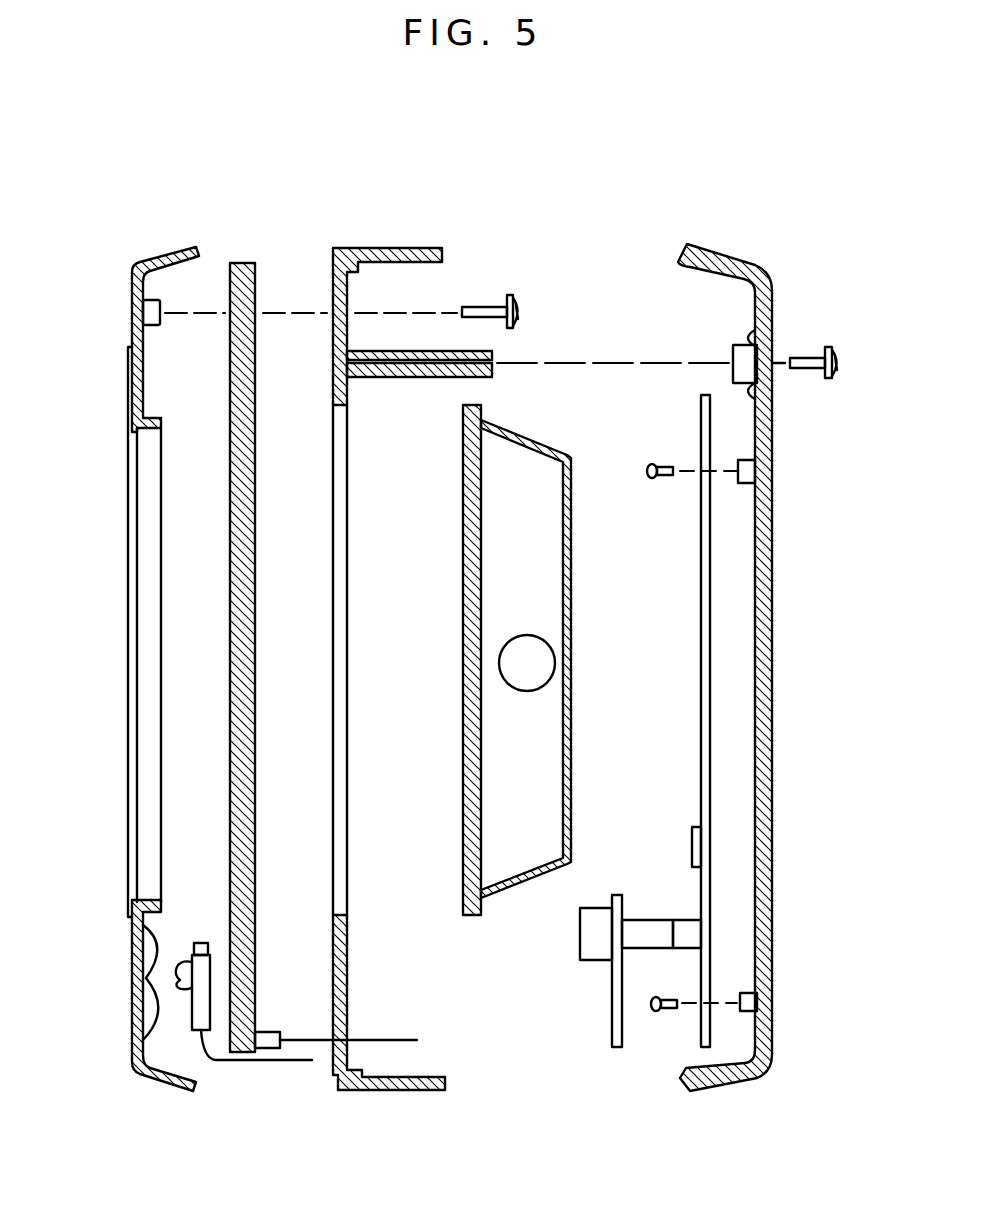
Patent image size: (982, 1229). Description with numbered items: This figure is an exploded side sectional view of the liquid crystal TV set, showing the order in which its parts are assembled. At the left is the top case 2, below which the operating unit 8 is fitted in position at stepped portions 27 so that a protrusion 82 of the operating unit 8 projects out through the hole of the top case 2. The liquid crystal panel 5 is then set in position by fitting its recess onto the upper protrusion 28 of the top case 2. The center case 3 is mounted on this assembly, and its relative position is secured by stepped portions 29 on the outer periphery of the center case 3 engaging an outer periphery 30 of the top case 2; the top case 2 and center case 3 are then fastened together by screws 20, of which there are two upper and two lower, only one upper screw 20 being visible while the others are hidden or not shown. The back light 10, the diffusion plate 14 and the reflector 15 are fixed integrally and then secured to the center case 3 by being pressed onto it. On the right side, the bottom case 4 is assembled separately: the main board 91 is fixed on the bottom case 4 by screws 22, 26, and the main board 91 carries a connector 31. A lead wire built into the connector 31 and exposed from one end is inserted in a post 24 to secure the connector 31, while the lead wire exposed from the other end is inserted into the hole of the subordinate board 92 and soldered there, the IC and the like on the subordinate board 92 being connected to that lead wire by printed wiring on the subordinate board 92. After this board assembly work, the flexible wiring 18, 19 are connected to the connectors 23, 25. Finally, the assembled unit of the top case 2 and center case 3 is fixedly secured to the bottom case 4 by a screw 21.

The top case 2 is at (155, 253).
The center case 3 is at (408, 247).
The bottom case 4 is at (718, 252).
The liquid crystal panel 5 is at (247, 263).
The operating unit 8 is at (198, 943).
The back light 10 is at (503, 670).
The diffusion plate 14 is at (463, 820).
The reflector 15 is at (571, 740).
The flexible wiring 18 is at (417, 1040).
The flexible wiring 19 is at (270, 1062).
The screw 20 is at (515, 303).
The screw 21 is at (838, 380).
The screw 22 is at (653, 482).
The connector 23 is at (596, 908).
The post 24 is at (642, 920).
The connector 25 is at (695, 825).
The screw 26 is at (653, 1010).
The stepped portion 27 is at (142, 978).
The upper protrusion 28 is at (157, 326).
The stepped portion 29 is at (340, 256).
The outer periphery 30 is at (198, 249).
The connector 31 is at (690, 918).
The protrusion 82 is at (180, 962).
The main board 91 is at (702, 653).
The subordinate board 92 is at (615, 1050).